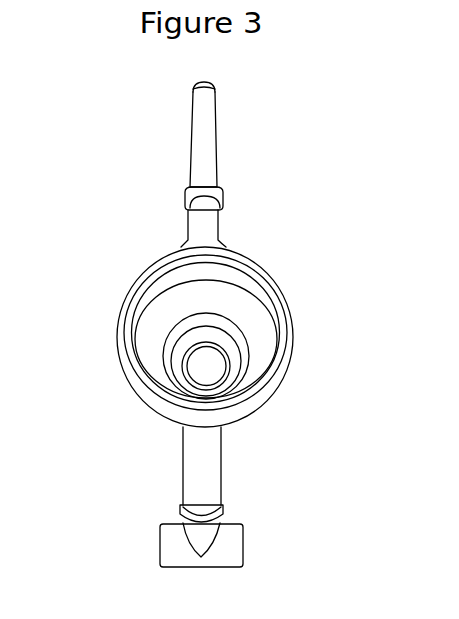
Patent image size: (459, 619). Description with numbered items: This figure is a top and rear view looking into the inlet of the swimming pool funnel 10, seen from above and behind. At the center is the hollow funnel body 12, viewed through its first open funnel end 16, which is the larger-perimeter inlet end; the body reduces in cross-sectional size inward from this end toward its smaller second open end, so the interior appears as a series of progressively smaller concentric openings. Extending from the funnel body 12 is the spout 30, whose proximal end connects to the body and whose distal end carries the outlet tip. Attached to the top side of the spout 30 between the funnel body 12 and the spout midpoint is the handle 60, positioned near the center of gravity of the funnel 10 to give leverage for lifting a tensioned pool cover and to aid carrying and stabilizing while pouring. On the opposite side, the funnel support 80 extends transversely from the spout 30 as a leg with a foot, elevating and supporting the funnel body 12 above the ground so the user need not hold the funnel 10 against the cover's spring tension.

The swimming pool funnel 10 is at (103, 170).
The hollow funnel body 12 is at (153, 403).
The first open funnel end 16 is at (150, 285).
The spout 30 is at (200, 149).
The handle 60 is at (202, 224).
The funnel support 80 is at (202, 478).